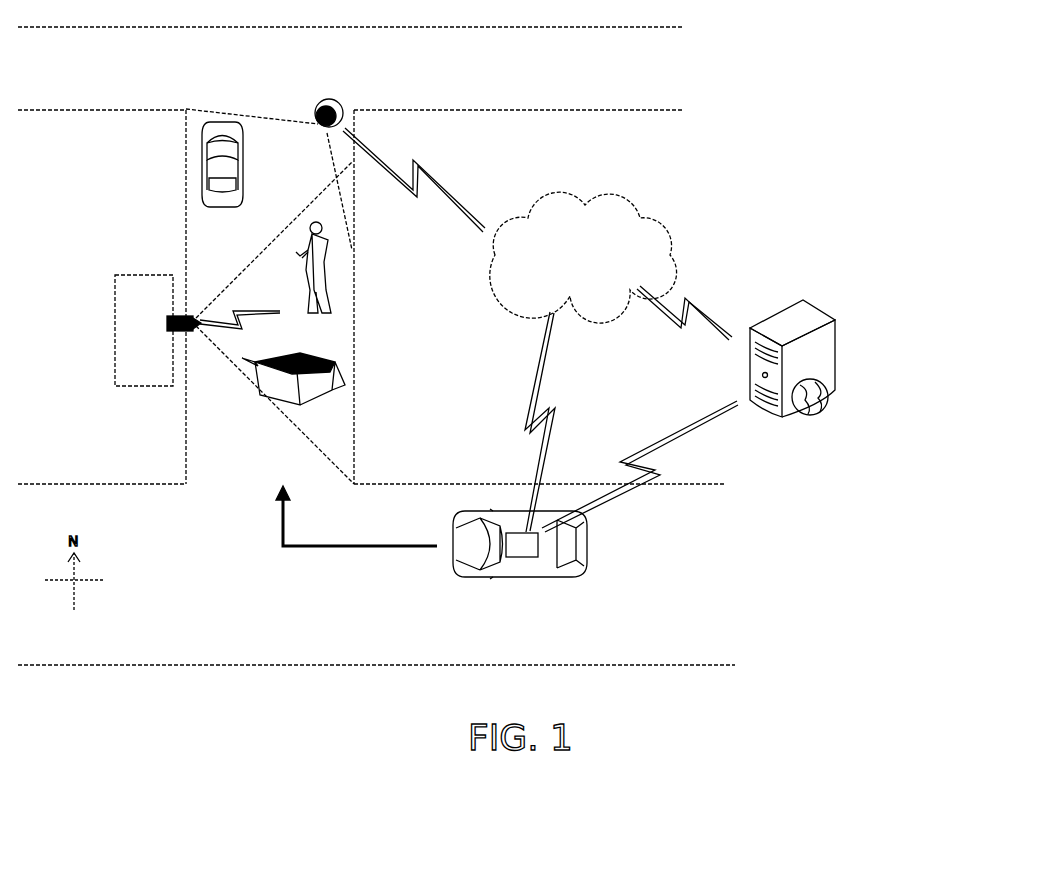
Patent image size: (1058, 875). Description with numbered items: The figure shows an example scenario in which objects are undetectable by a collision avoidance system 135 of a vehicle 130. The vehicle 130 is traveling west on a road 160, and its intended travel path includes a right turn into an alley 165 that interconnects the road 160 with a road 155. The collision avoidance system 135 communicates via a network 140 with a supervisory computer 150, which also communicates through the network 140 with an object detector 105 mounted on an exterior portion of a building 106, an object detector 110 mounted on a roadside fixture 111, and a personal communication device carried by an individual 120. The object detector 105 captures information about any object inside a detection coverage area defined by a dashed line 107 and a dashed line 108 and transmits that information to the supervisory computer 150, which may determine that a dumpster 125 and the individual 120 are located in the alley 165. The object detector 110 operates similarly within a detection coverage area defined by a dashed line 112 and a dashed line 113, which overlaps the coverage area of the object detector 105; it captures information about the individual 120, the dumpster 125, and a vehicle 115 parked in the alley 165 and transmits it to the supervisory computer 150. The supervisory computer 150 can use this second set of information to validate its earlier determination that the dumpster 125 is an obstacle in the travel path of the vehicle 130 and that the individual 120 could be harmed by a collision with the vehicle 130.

The object detector 105 is at (192, 310).
The building 106 is at (144, 330).
The dashed line 107 is at (255, 259).
The dashed line 108 is at (222, 352).
The object detector 110 is at (339, 102).
The roadside fixture 111 is at (316, 113).
The dashed line 112 is at (263, 117).
The dashed line 113 is at (335, 170).
The vehicle 115 is at (250, 172).
The individual 120 is at (300, 261).
The dumpster 125 is at (286, 346).
The vehicle 130 is at (525, 593).
The collision avoidance system 135 is at (522, 545).
The network 140 is at (537, 330).
The supervisory computer 150 is at (852, 361).
The road 155 is at (713, 69).
The road 160 is at (755, 574).
The alley 165 is at (231, 505).